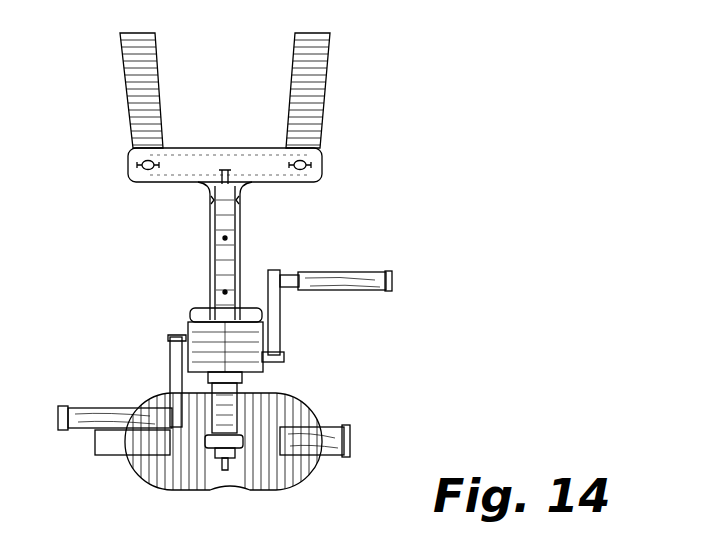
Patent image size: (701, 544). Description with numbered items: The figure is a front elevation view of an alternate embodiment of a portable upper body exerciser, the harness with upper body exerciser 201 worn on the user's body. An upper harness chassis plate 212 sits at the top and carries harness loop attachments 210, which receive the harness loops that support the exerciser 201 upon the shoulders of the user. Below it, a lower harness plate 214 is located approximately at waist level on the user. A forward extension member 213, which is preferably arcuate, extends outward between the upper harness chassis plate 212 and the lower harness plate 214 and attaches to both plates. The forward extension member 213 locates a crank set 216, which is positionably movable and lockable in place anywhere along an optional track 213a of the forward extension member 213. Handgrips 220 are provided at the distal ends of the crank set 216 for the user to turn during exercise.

The harness with upper body exerciser 201 is at (449, 147).
The harness loop attachments 210 is at (153, 63).
The upper harness chassis plate 212 is at (270, 173).
The forward extension member 213 is at (208, 281).
The track 213a is at (241, 265).
The lower harness plate 214 is at (246, 489).
The crank set 216 is at (247, 362).
The handgrips 220 is at (368, 291).